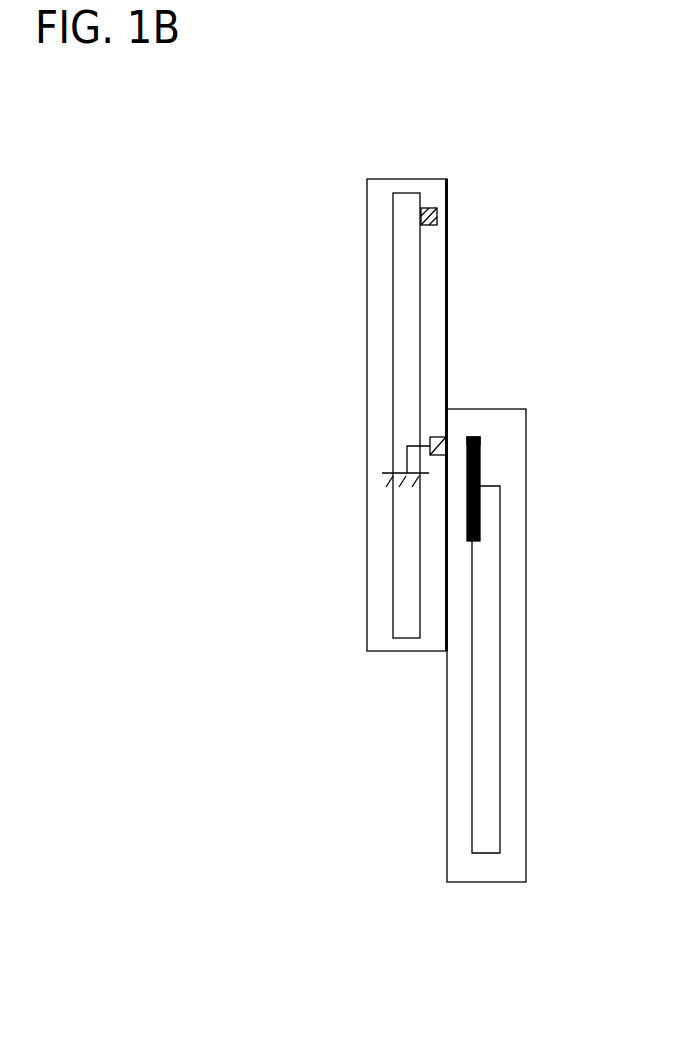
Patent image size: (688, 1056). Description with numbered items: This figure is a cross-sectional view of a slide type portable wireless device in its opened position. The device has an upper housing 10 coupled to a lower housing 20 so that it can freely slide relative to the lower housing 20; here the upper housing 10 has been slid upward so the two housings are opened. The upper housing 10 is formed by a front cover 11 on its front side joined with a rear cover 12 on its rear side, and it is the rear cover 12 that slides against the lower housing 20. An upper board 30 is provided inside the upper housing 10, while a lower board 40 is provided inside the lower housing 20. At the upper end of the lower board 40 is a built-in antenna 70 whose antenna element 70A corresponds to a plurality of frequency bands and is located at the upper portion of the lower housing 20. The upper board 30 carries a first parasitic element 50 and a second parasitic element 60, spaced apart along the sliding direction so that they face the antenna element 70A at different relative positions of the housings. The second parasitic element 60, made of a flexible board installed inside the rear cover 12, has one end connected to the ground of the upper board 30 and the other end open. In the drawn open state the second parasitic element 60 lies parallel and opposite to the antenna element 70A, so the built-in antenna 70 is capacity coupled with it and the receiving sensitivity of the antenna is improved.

The upper housing 10 is at (357, 415).
The front cover 11 is at (366, 220).
The rear cover 12 is at (447, 297).
The lower housing 20 is at (527, 621).
The upper board 30 is at (393, 596).
The lower board 40 is at (500, 548).
The first parasitic element 50 is at (426, 208).
The second parasitic element 60 is at (438, 437).
The built-in antenna 70 is at (490, 451).
The antenna element 70A is at (472, 437).